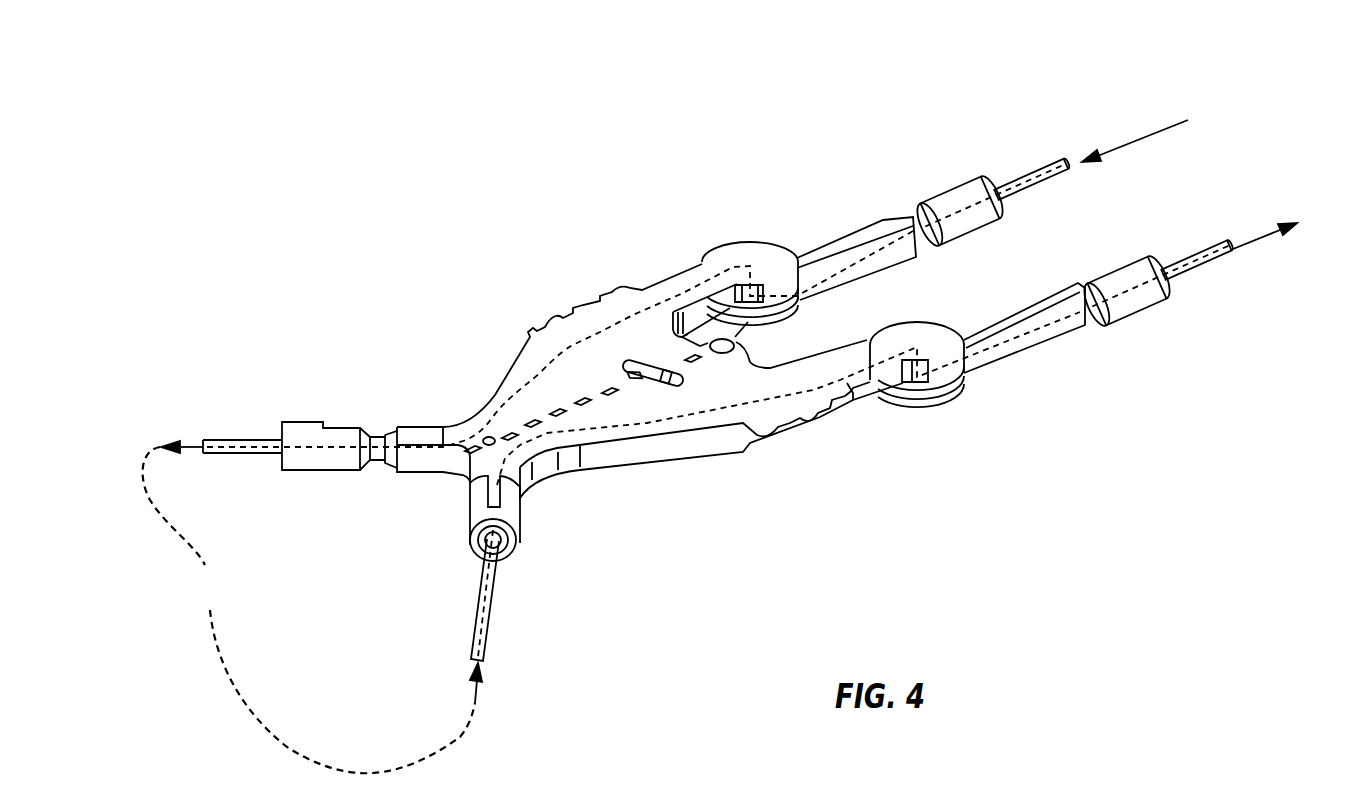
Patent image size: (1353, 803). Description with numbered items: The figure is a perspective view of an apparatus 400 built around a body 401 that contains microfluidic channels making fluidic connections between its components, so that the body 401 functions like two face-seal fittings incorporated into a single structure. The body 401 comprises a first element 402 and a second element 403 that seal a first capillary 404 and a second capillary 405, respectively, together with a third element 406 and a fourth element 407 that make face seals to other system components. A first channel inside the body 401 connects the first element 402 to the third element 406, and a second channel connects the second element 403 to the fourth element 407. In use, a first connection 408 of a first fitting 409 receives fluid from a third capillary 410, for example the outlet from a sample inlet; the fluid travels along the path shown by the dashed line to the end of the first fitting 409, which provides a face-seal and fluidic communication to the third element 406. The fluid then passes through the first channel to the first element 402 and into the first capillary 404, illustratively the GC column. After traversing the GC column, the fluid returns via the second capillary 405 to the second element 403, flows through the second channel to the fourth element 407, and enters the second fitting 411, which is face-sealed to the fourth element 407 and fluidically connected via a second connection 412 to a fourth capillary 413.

The apparatus 400 is at (624, 192).
The body 401 is at (563, 300).
The first element 402 is at (280, 427).
The second element 403 is at (517, 527).
The first capillary 404 is at (228, 438).
The second capillary 405 is at (500, 628).
The third element 406 is at (757, 248).
The fourth element 407 is at (932, 350).
The first connection 408 is at (947, 192).
The first fitting 409 is at (847, 283).
The third capillary 410 is at (1020, 183).
The second fitting 411 is at (1027, 360).
The second connection 412 is at (1105, 272).
The fourth capillary 413 is at (1188, 257).